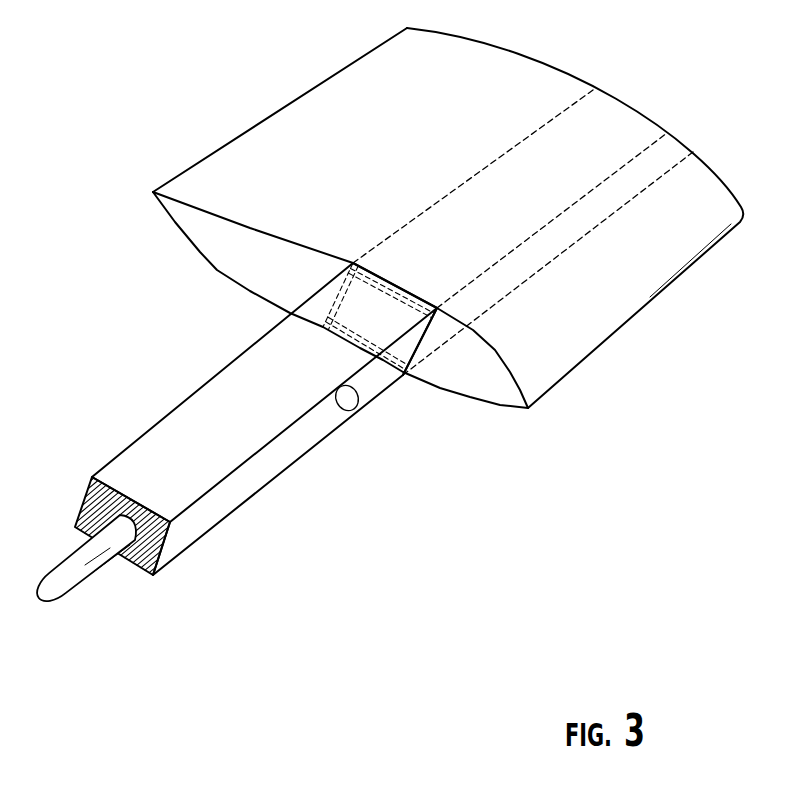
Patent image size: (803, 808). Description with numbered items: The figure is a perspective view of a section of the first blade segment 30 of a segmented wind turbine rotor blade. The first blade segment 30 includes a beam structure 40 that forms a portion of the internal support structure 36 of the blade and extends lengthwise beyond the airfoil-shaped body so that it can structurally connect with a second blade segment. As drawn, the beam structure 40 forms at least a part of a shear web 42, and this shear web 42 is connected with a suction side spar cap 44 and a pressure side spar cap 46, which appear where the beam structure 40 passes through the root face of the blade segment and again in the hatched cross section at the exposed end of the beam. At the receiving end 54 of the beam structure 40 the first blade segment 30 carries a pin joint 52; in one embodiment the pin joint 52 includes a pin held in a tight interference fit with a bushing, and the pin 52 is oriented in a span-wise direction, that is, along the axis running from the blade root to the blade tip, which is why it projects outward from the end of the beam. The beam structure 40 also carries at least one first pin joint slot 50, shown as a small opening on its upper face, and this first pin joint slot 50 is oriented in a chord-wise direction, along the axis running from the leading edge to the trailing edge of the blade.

The first blade segment 30 is at (272, 123).
The internal support structure 36 is at (384, 373).
The beam structure 40 is at (125, 460).
The shear web 42 is at (307, 438).
The suction side spar cap 44 is at (347, 352).
The pressure side spar cap 46 is at (397, 278).
The first pin joint slot 50 is at (347, 398).
The pin joint 52 is at (92, 577).
The receiving end 54 is at (177, 567).